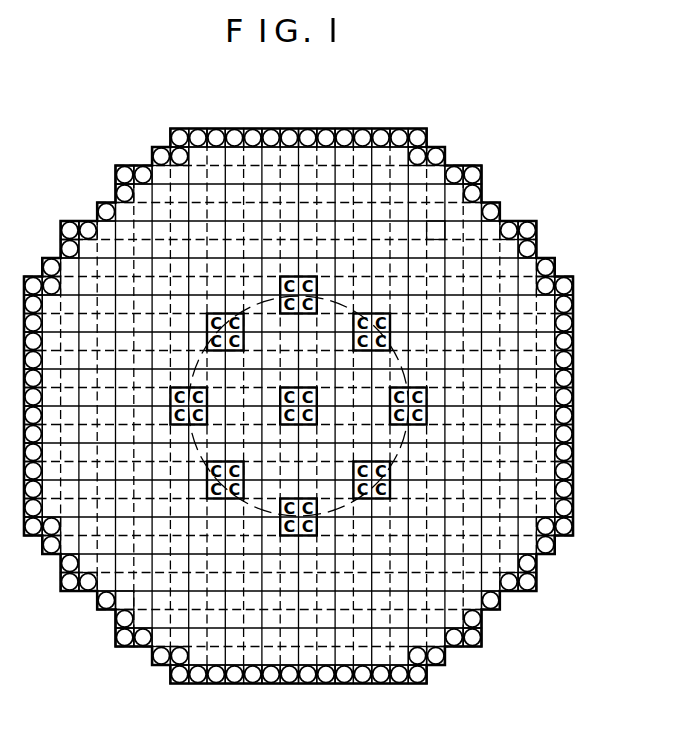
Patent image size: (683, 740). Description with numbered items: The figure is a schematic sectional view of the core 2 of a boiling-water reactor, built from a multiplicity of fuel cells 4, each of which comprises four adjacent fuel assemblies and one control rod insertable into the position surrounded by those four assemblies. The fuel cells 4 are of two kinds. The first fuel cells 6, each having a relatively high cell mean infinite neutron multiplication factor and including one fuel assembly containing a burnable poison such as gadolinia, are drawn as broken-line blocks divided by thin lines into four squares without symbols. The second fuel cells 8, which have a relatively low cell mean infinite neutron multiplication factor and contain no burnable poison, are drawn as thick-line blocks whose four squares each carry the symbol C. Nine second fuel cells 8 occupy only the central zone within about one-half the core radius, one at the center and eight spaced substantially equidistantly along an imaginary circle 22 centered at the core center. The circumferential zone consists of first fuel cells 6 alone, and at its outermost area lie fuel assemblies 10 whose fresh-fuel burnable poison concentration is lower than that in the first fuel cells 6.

The core 2 is at (466, 122).
The fuel cell 4 is at (432, 232).
The first fuel cell 6 is at (133, 601).
The second fuel cell 8 is at (383, 492).
The fuel assembly 10 is at (396, 680).
The imaginary circle 22 is at (403, 377).